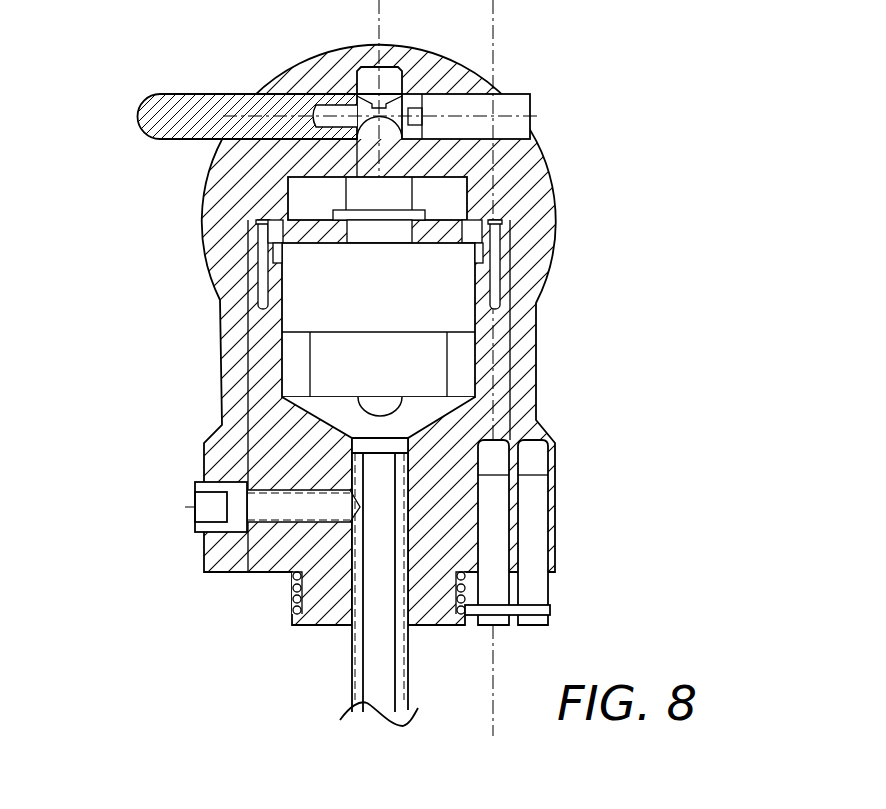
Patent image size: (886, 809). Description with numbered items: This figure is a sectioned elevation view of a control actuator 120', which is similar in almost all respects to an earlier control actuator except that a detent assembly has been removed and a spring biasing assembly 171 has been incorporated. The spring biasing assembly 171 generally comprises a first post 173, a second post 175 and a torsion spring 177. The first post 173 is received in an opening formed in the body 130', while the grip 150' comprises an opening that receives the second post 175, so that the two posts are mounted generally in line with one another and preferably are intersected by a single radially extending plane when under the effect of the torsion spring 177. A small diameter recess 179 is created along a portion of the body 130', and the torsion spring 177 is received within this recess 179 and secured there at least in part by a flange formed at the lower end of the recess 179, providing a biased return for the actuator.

The control actuator 120' is at (444, 368).
The body 130' is at (323, 335).
The grip 150' is at (466, 184).
The spring biasing assembly 171 is at (621, 566).
The first post 173 is at (488, 493).
The second post 175 is at (532, 515).
The torsion spring 177 is at (468, 612).
The recess 179 is at (303, 592).